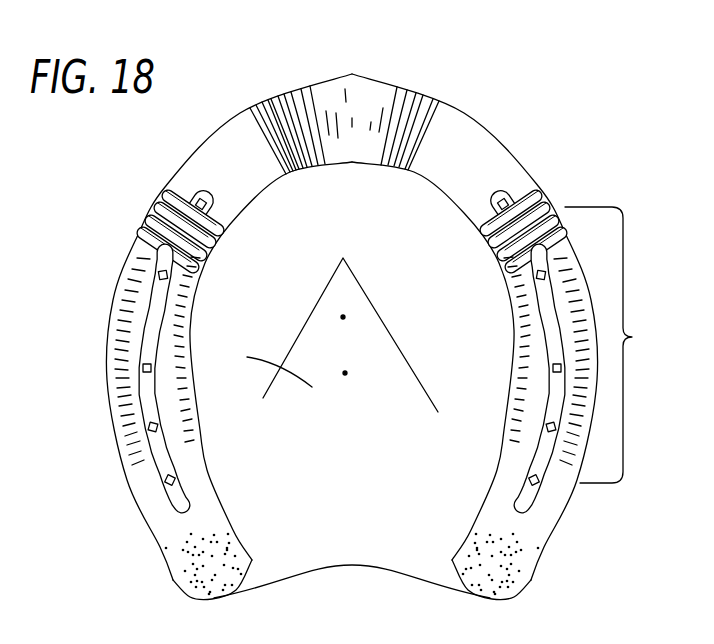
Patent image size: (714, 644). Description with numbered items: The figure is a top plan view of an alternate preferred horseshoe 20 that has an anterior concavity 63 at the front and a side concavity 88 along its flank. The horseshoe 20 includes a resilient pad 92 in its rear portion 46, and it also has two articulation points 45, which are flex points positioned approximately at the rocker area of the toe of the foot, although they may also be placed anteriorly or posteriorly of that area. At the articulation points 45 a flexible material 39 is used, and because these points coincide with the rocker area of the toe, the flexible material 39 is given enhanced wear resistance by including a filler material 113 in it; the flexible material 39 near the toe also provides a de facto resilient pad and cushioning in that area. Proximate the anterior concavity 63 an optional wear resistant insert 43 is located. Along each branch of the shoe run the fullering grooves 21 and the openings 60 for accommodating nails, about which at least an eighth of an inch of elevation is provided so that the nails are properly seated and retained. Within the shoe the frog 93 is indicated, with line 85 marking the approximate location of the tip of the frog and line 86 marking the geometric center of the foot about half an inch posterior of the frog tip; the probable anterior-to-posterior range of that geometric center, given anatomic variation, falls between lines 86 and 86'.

The horseshoe 20 is at (522, 139).
The fullering grooves 21 is at (160, 457).
The flexible material 39 is at (140, 228).
The wear resistant insert 43 is at (327, 157).
The articulation points 45 is at (180, 224).
The rear portion 46 is at (143, 470).
The openings 60 is at (142, 370).
The anterior concavity 63 is at (252, 87).
The tip of the frog 85 is at (343, 258).
The geometric center of the foot 86 is at (394, 318).
The geometric center position line 86' is at (409, 355).
The side concavity 88 is at (619, 345).
The resilient pad 92 is at (117, 555).
The frog 93 is at (263, 365).
The filler material 113 is at (513, 563).